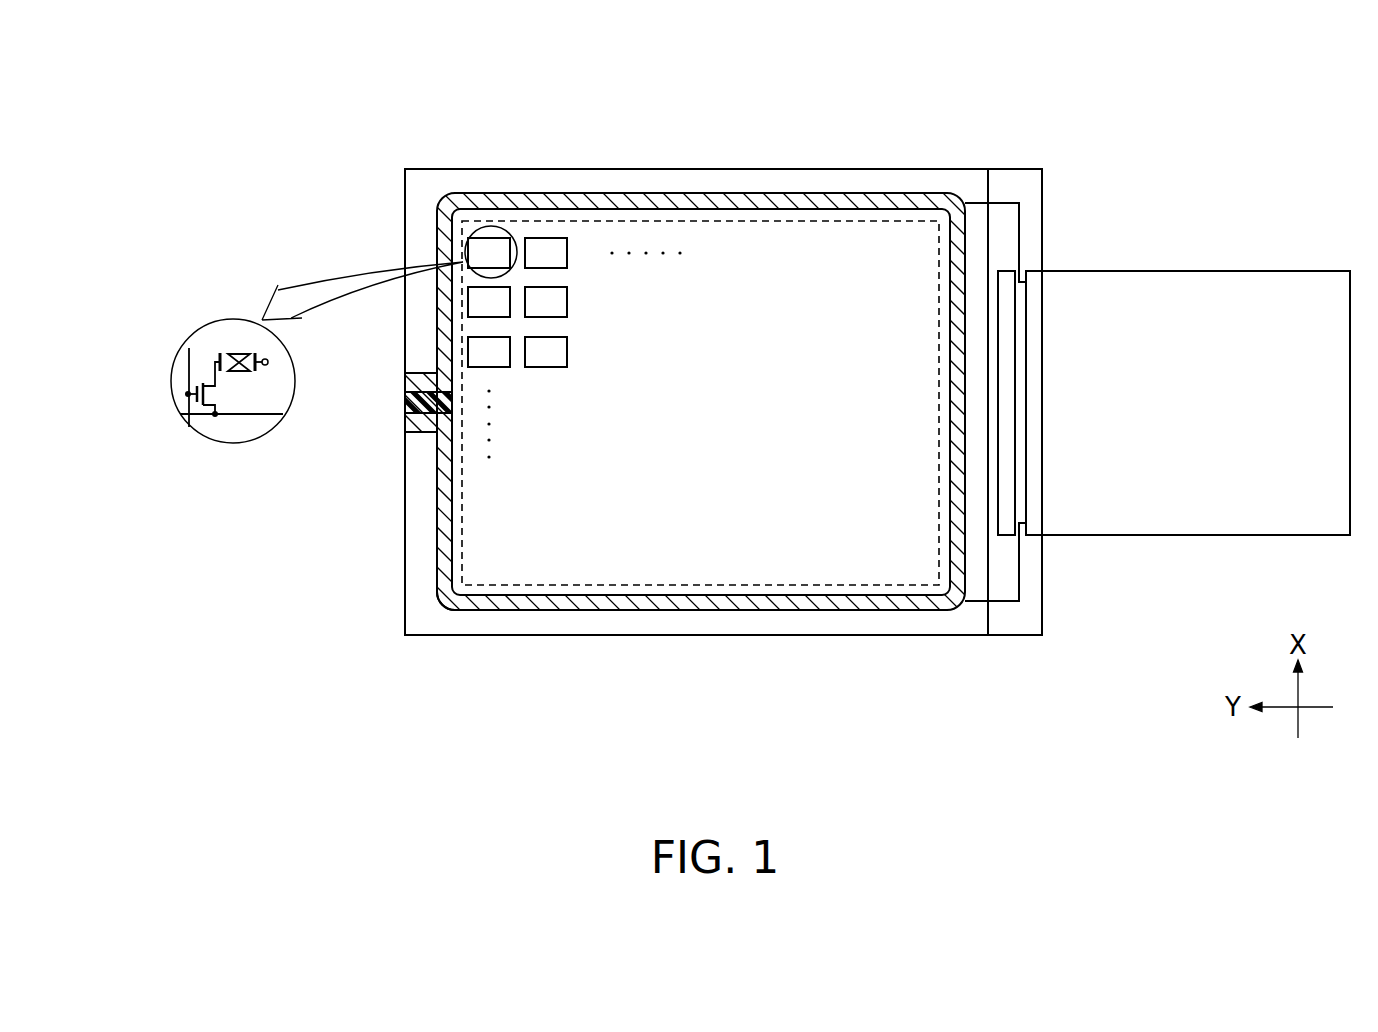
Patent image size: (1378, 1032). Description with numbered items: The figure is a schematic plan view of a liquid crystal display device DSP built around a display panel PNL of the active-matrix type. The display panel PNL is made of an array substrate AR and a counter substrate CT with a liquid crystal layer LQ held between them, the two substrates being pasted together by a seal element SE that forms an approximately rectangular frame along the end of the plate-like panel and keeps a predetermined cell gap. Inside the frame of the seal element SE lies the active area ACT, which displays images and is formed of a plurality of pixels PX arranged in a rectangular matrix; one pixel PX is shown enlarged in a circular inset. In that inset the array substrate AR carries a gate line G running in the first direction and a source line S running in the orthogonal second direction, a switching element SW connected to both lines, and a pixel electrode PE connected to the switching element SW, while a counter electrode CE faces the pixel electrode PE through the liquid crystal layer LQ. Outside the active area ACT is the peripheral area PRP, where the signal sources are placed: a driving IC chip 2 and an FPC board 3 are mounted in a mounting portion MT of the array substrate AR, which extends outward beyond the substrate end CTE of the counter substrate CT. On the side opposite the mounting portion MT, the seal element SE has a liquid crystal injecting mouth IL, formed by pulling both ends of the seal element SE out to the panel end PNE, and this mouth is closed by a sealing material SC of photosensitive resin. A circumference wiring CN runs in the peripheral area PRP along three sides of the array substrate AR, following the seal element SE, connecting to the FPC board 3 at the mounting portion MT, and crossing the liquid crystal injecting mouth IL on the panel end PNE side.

The liquid crystal display device DSP is at (1092, 165).
The display panel PNL is at (1017, 641).
The substrate end CTE is at (992, 195).
The seal element SE is at (766, 196).
The sealing material SC is at (407, 392).
The liquid crystal injecting mouth IL is at (403, 390).
The active area ACT is at (806, 598).
The pixel PX is at (492, 238).
The gate line G is at (187, 370).
The source line S is at (243, 416).
The switching element SW is at (232, 388).
The pixel electrode PE is at (218, 352).
The liquid crystal layer LQ is at (238, 353).
The counter electrode CE is at (268, 366).
The counter substrate CT is at (885, 622).
The driving IC chip 2 is at (1003, 270).
The FPC board 3 is at (1204, 271).
The mounting portion MT is at (1027, 551).
The array substrate AR is at (1032, 603).
The circumference wiring CN is at (973, 602).
The panel end PNE is at (392, 566).
The peripheral area PRP is at (430, 616).